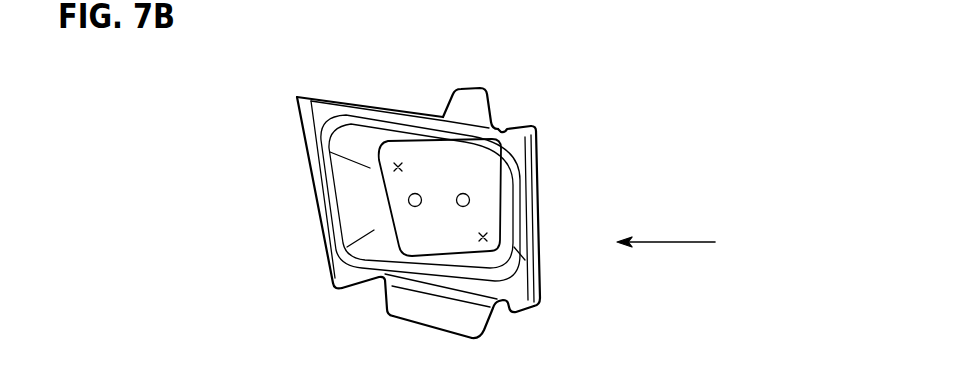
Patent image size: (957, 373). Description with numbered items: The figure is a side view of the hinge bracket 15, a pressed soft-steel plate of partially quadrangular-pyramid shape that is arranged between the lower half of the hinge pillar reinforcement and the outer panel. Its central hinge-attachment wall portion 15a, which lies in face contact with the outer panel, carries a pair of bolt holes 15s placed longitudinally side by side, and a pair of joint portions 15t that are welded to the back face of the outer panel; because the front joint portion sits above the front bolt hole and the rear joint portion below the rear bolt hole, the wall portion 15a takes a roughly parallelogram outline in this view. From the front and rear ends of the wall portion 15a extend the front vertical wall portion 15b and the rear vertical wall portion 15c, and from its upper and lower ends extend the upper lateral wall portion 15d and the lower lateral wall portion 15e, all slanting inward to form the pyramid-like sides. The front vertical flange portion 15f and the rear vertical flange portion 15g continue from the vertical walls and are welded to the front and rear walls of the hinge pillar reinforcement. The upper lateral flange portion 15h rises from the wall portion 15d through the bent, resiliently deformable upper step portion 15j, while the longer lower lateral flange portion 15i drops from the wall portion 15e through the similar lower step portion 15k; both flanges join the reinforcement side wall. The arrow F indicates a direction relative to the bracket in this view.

The hinge bracket 15 is at (553, 88).
The hinge-attachment wall portion 15a is at (488, 202).
The front vertical wall portion 15b is at (340, 193).
The rear vertical wall portion 15c is at (523, 229).
The upper lateral wall portion 15d is at (416, 137).
The lower lateral wall portion 15e is at (452, 272).
The front vertical flange portion 15f is at (297, 116).
The rear vertical flange portion 15g is at (537, 153).
The upper lateral flange portion 15h is at (482, 98).
The lower lateral flange portion 15i is at (394, 308).
The upper step portion 15j is at (493, 128).
The lower step portion 15k is at (347, 305).
The bolt holes 15s is at (458, 206).
The joint portions 15t is at (396, 165).
The force direction F is at (667, 242).